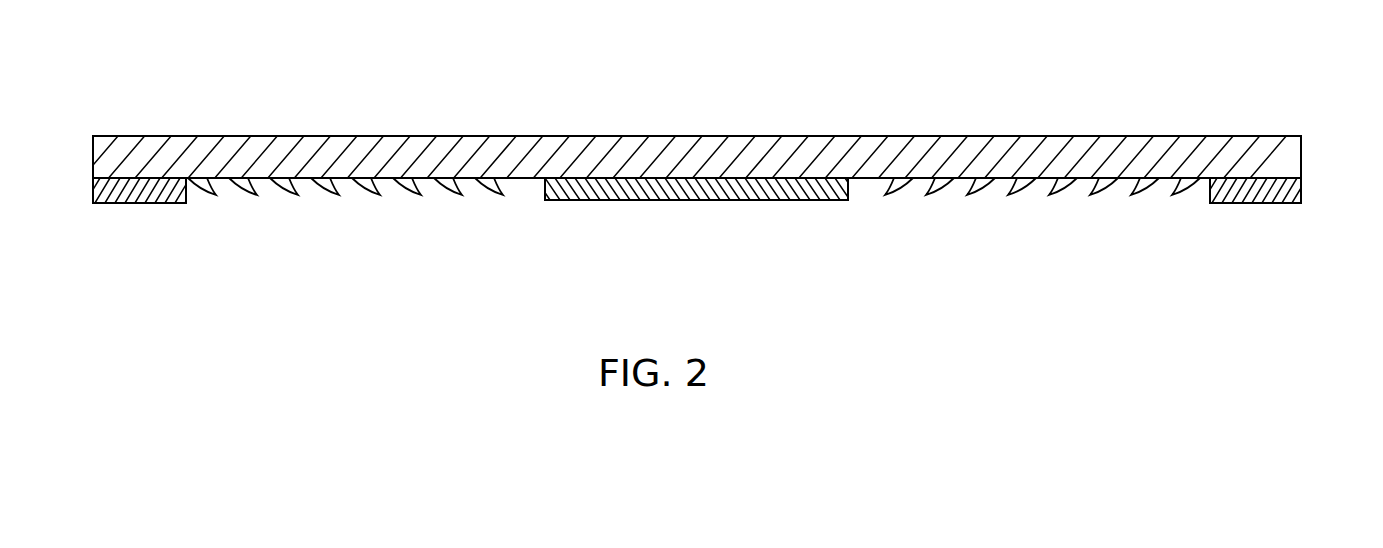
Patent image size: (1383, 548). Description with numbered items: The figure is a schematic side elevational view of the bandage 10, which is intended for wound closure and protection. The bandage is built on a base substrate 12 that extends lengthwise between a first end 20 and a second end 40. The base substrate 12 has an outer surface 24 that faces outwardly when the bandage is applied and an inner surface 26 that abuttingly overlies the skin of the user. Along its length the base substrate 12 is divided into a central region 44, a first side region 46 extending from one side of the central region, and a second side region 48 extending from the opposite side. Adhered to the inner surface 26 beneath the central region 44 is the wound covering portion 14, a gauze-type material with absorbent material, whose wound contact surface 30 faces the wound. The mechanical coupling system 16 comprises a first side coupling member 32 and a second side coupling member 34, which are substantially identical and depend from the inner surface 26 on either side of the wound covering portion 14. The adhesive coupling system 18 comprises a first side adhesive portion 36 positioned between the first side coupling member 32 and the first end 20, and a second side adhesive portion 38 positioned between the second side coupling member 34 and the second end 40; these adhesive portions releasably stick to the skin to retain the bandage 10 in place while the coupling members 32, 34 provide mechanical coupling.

The bandage 10 is at (1306, 85).
The base substrate 12 is at (1097, 136).
The wound covering portion 14 is at (638, 201).
The mechanical coupling system 16 is at (1124, 193).
The adhesive coupling system 18 is at (1238, 204).
The first end 20 is at (93, 157).
The outer surface 24 is at (317, 136).
The inner surface 26 is at (517, 180).
The wound contact surface 30 is at (748, 200).
The first side coupling member 32 is at (399, 192).
The second side coupling member 34 is at (995, 192).
The first side adhesive portion 36 is at (135, 204).
The second side adhesive portion 38 is at (1278, 205).
The second end 40 is at (1301, 157).
The central region 44 is at (700, 228).
The first side region 46 is at (265, 226).
The second side region 48 is at (1063, 228).